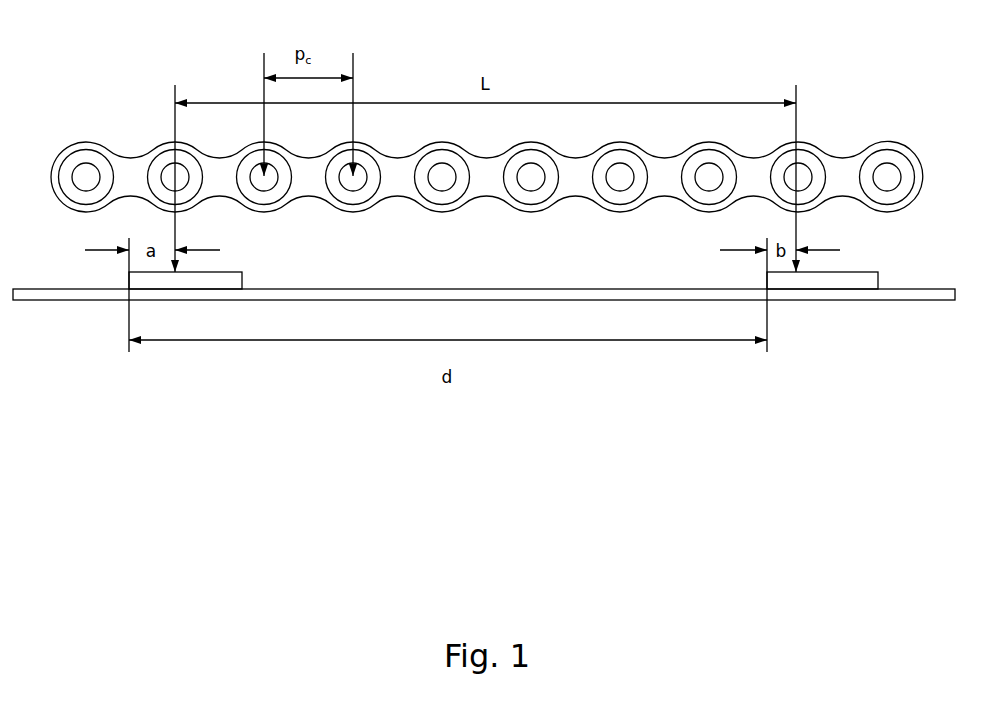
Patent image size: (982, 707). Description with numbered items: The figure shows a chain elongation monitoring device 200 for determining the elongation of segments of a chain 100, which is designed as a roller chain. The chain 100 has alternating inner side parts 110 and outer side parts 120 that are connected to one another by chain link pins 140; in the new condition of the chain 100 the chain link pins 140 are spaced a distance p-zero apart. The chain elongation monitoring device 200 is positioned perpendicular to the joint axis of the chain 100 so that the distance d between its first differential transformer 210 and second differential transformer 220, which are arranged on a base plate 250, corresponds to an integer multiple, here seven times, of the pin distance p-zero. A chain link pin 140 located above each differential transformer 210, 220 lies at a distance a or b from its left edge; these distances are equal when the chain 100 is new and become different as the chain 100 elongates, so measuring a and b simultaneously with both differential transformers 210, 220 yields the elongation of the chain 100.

The chain 100 is at (487, 153).
The inner side parts 110 is at (575, 193).
The outer side parts 120 is at (305, 192).
The chain link pins 140 is at (531, 180).
The chain elongation monitoring device 200 is at (486, 368).
The first differential transformer 210 is at (168, 283).
The second differential transformer 220 is at (822, 285).
The base plate 250 is at (913, 297).